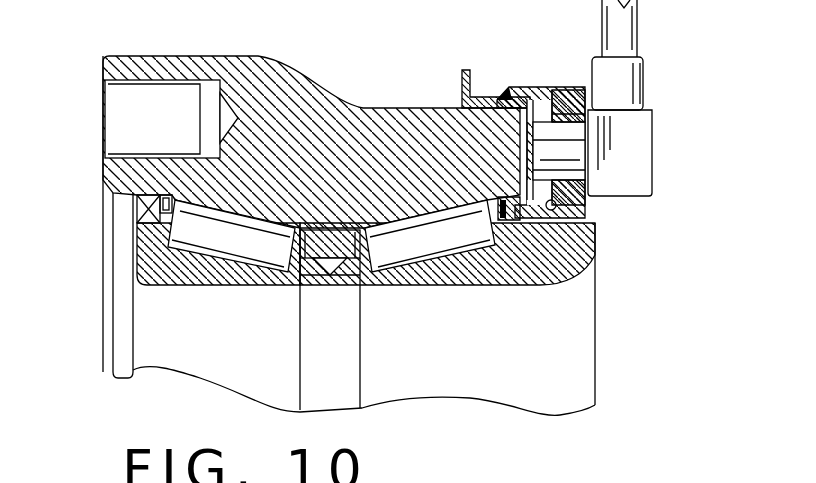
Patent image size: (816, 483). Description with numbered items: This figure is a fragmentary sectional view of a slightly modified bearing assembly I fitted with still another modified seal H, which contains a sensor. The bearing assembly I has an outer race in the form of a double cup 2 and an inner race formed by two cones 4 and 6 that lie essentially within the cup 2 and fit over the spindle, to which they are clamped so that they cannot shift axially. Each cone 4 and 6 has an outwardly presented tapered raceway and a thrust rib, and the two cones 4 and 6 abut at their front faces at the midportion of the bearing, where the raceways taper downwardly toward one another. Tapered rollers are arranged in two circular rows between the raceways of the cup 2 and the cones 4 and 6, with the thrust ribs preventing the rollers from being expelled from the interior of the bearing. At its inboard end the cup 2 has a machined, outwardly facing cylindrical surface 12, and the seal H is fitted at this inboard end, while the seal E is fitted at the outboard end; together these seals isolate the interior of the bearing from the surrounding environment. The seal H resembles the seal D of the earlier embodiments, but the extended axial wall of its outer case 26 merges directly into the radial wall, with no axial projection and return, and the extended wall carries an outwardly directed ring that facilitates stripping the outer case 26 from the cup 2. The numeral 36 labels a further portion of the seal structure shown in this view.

The bearing assembly I is at (314, 66).
The cup 2 is at (373, 101).
The cone 4 is at (505, 351).
The cone 6 is at (220, 344).
The cylindrical surface 12 is at (487, 100).
The outer case 26 is at (541, 90).
The sensor element 36 is at (585, 192).
The seal H is at (662, 78).
The seal E is at (128, 213).